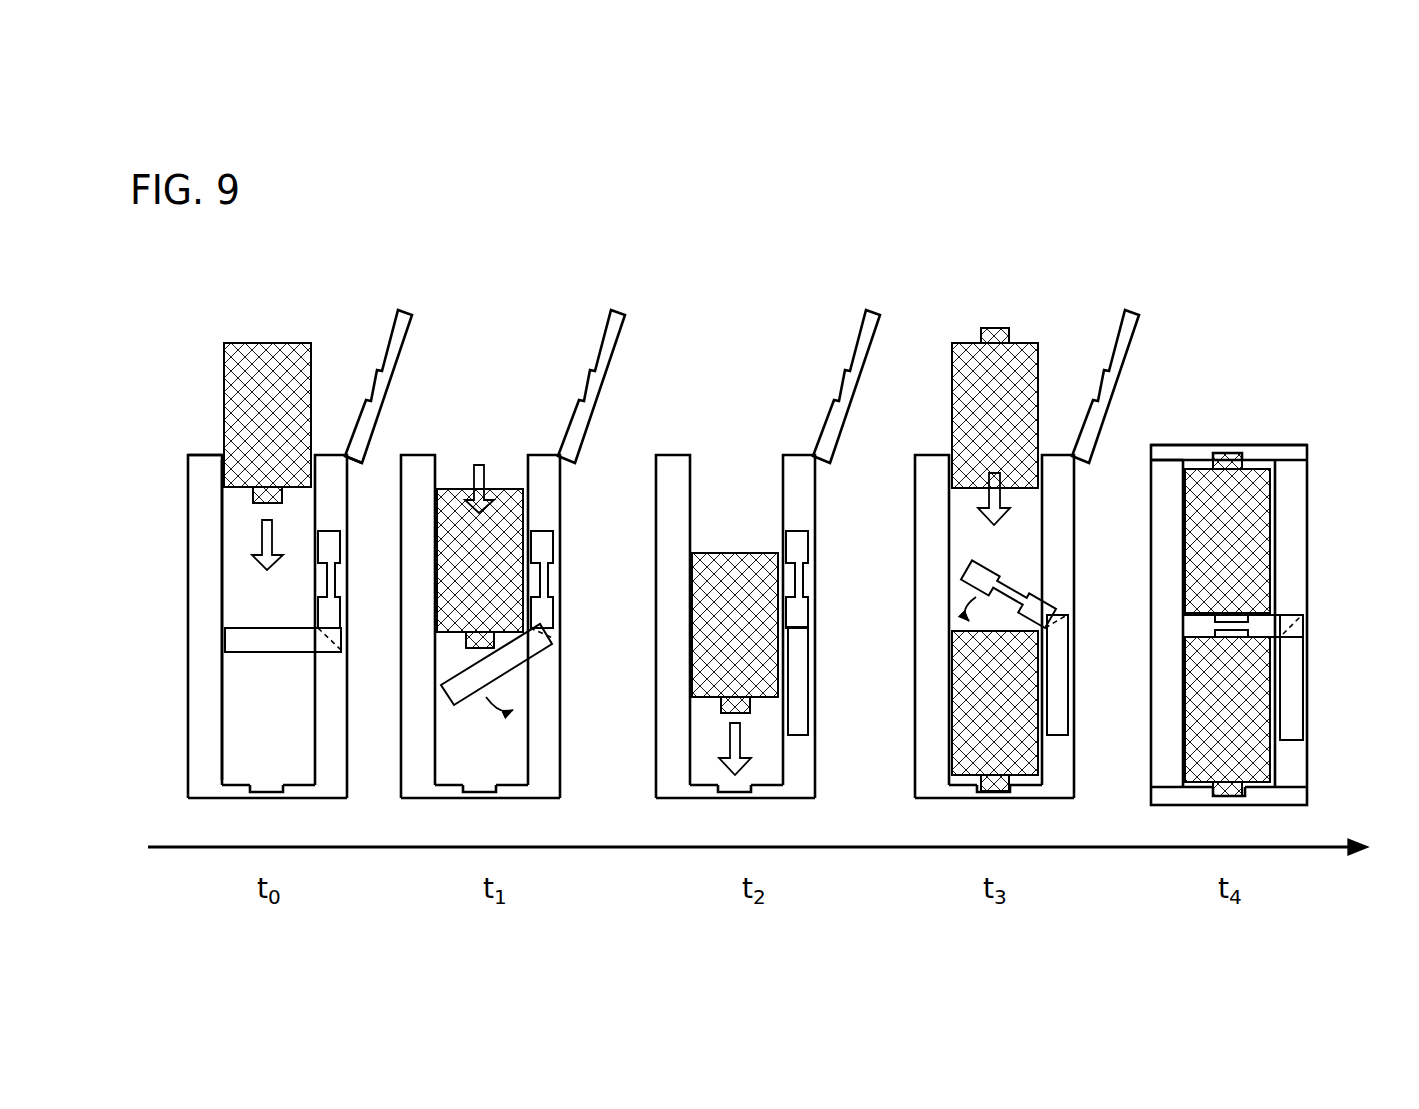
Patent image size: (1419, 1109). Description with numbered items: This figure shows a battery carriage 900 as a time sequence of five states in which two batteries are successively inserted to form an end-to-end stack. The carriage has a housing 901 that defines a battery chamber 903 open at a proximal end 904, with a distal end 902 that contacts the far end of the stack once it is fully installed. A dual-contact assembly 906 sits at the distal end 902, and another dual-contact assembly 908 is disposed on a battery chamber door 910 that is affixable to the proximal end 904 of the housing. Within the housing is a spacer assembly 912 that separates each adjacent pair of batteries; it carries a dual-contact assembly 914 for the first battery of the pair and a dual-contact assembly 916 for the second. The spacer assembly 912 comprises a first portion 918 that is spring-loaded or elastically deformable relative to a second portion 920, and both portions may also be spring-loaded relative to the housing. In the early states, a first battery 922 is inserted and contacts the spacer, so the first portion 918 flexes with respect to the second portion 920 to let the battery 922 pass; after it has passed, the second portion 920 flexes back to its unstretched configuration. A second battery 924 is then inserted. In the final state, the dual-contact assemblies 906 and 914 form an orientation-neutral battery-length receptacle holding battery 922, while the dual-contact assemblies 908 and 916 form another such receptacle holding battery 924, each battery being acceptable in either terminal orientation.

The battery carriage 900 is at (277, 290).
The housing 901 is at (202, 606).
The distal end 902 is at (186, 787).
The battery chamber 903 is at (222, 560).
The proximal end 904 is at (186, 460).
The dual-contact assembly 906 is at (297, 790).
The dual-contact assembly 908 is at (386, 352).
The battery chamber door 910 is at (362, 442).
The spacer assembly 912 is at (336, 625).
The dual-contact assembly 914 is at (318, 604).
The dual-contact assembly 916 is at (370, 598).
The first portion 918 is at (508, 653).
The second portion 920 is at (540, 613).
The battery 922 is at (747, 569).
The battery 924 is at (1111, 470).